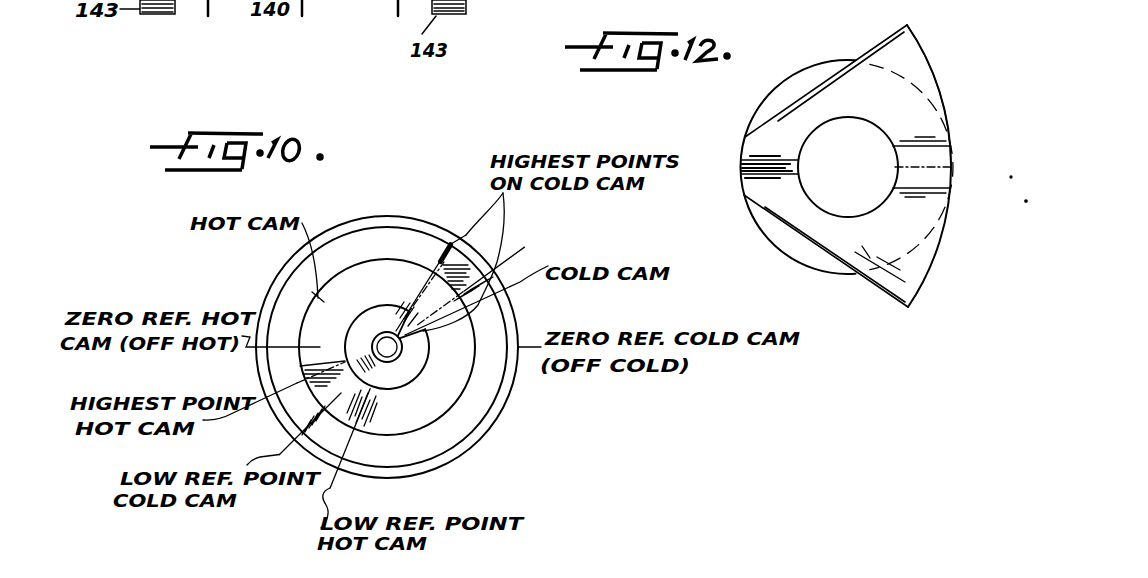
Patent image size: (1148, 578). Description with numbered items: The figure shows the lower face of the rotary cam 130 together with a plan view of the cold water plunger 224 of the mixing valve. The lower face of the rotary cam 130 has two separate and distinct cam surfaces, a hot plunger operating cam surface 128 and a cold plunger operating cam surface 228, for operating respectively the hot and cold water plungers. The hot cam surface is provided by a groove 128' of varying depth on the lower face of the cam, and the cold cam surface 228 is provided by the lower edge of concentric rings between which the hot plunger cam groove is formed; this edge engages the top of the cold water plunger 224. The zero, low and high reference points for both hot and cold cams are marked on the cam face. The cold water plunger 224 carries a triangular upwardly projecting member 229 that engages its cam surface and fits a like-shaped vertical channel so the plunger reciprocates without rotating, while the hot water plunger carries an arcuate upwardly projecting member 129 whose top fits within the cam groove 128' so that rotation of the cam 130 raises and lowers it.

In FIG. 10, the rotary cam 130 is at (402, 216).
In FIG. 10, the hot plunger operating cam surface 128 is at (402, 361).
In FIG. 10, the cam groove 128' is at (476, 391).
In FIG. 10, the cold plunger operating cam surface 228 is at (299, 283).
In FIG. 12, the cold water plunger 224 is at (847, 286).
In FIG. 12, the upwardly projecting member 229 is at (775, 117).
In FIG. 12, the upwardly projecting member 129 is at (868, 83).